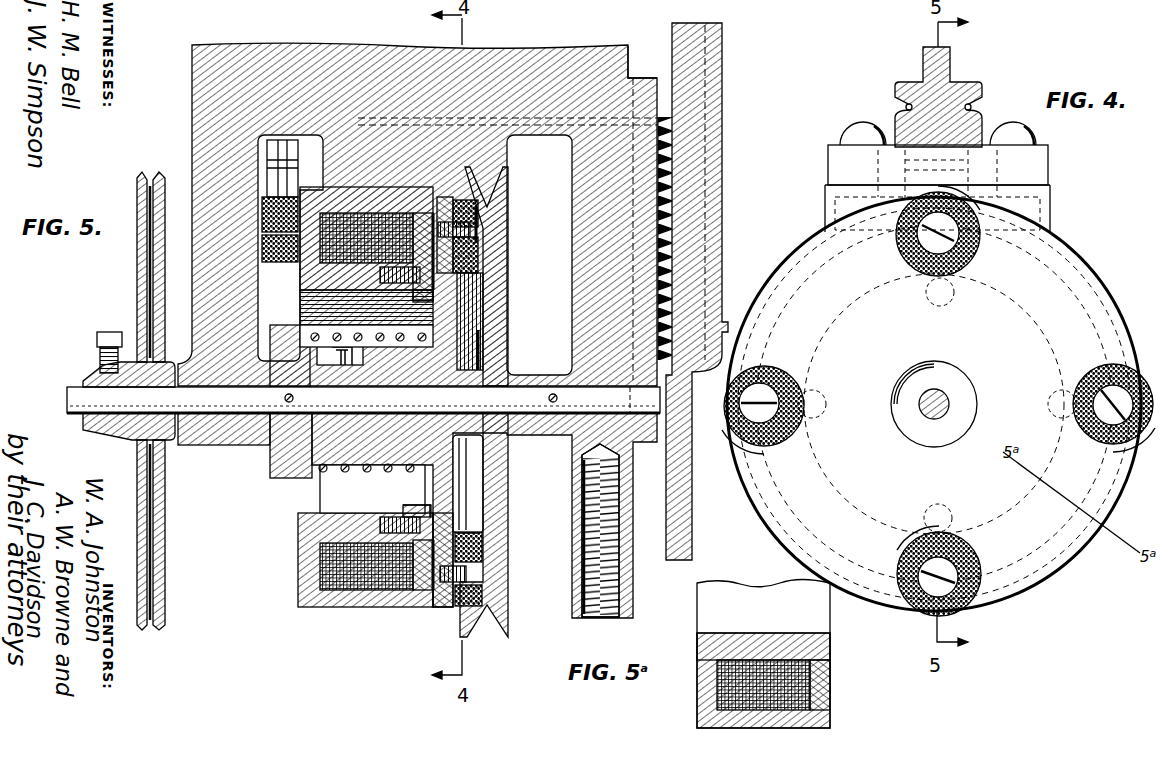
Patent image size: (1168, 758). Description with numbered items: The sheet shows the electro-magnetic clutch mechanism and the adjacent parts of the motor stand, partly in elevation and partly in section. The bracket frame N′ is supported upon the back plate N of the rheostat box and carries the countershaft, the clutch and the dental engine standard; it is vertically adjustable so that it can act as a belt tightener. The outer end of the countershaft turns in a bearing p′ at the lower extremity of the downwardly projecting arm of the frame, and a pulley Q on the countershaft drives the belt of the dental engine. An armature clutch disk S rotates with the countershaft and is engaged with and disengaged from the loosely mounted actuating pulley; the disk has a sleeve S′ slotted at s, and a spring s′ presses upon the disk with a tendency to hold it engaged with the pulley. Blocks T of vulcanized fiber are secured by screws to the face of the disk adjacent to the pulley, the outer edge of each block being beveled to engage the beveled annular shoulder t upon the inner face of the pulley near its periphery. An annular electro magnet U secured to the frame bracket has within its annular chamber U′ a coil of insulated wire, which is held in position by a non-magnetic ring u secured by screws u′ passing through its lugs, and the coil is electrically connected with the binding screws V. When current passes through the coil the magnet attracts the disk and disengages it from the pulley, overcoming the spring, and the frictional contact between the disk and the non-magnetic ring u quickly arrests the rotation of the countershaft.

In FIG. 5, the bracket frame N′ is at (277, 60).
In FIG. 4, the bracket frame N′ is at (920, 66).
In FIG. 5, the back plate N is at (722, 207).
In FIG. 5, the binding screws V is at (292, 186).
In FIG. 4, the binding screws V is at (880, 172).
In FIG. 5, the annular electro magnet U is at (310, 283).
In FIG. 4, the annular electro magnet U is at (806, 492).
In FIG. 5a, the annular electro magnet U is at (757, 656).
In FIG. 5, the annular chamber U′ is at (375, 607).
In FIG. 5a, the annular chamber U′ is at (790, 660).
In FIG. 5, the non-magnetic ring u is at (420, 616).
In FIG. 4, the non-magnetic ring u is at (1088, 300).
In FIG. 5a, the non-magnetic ring u is at (832, 690).
In FIG. 5, the screws u′ is at (470, 285).
In FIG. 4, the screws u′ is at (936, 404).
In FIG. 5, the beveled annular shoulder t is at (470, 200).
In FIG. 5, the blocks T is at (480, 250).
In FIG. 4, the blocks T is at (938, 401).
In FIG. 5, the armature clutch disk S is at (432, 325).
In FIG. 4, the armature clutch disk S is at (934, 404).
In FIG. 5, the sleeve S′ is at (340, 472).
In FIG. 5, the slot s is at (340, 356).
In FIG. 5, the spring s′ is at (407, 497).
In FIG. 5, the bearing p′ is at (213, 440).
In FIG. 5, the pulley Q is at (140, 272).